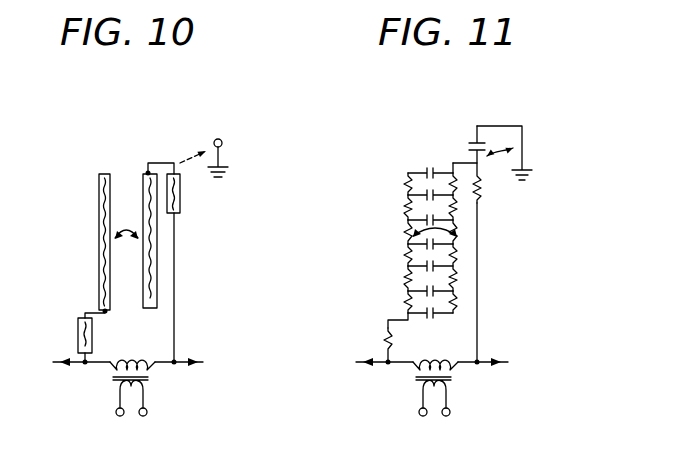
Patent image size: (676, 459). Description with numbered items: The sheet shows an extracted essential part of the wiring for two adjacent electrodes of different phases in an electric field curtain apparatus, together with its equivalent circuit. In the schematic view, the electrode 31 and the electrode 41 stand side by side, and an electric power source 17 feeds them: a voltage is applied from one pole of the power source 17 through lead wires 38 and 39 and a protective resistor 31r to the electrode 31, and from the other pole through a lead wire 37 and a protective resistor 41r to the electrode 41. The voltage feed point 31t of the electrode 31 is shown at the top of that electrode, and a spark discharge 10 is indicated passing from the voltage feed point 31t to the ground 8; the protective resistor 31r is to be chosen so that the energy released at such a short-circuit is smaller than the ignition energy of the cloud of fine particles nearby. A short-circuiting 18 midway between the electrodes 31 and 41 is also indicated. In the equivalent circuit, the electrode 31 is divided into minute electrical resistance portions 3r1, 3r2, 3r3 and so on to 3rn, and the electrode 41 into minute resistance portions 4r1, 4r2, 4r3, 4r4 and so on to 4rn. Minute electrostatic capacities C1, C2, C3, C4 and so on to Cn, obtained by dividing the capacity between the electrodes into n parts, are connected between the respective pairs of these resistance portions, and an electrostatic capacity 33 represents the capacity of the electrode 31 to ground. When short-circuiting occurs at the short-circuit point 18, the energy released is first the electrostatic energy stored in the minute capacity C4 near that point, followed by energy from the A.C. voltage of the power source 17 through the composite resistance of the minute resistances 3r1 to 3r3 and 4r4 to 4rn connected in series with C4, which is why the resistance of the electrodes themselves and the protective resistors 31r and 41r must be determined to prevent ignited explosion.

In FIG. 10, the ground 8 is at (223, 141).
In FIG. 10, the spark discharge 10 is at (190, 149).
In FIG. 11, the spark discharge 10 is at (515, 147).
In FIG. 10, the electric power source 17 is at (153, 376).
In FIG. 11, the electric power source 17 is at (457, 377).
In FIG. 10, the short-circuit point 18 is at (110, 230).
In FIG. 11, the short-circuit point 18 is at (457, 227).
In FIG. 10, the electrode 31 is at (143, 183).
In FIG. 10, the voltage feed point 31t is at (160, 162).
In FIG. 10, the protective resistor 31r is at (181, 206).
In FIG. 11, the protective resistor 31r is at (481, 191).
In FIG. 11, the electrostatic capacity 33 is at (482, 138).
In FIG. 10, the lead wire 37 is at (75, 365).
In FIG. 11, the lead wire 37 is at (378, 364).
In FIG. 10, the lead wire 38 is at (190, 365).
In FIG. 11, the lead wire 38 is at (493, 364).
In FIG. 10, the lead wire 39 is at (178, 288).
In FIG. 11, the lead wire 39 is at (481, 322).
In FIG. 10, the electrode 41 is at (99, 188).
In FIG. 10, the protective resistor 41r is at (78, 333).
In FIG. 11, the protective resistor 41r is at (383, 342).
In FIG. 11, the minute electrical resistance portion 3r1 is at (450, 174).
In FIG. 11, the minute electrical resistance portion 3r2 is at (458, 205).
In FIG. 11, the minute electrical resistance portion 3r3 is at (458, 236).
In FIG. 11, the minute electrical resistance portion 3rn is at (457, 300).
In FIG. 11, the minute electrical resistance portion 4r1 is at (403, 179).
In FIG. 11, the minute electrical resistance portion 4r2 is at (403, 208).
In FIG. 11, the minute electrical resistance portion 4r3 is at (403, 231).
In FIG. 11, the minute electrical resistance portion 4r4 is at (403, 258).
In FIG. 11, the minute electrical resistance portion 4rn is at (403, 302).
In FIG. 11, the minute electrostatic capacity C1 is at (428, 172).
In FIG. 11, the minute electrostatic capacity C2 is at (425, 193).
In FIG. 11, the minute electrostatic capacity C3 is at (427, 222).
In FIG. 11, the minute electrostatic capacity C4 is at (438, 247).
In FIG. 11, the minute electrostatic capacity Cn is at (438, 320).